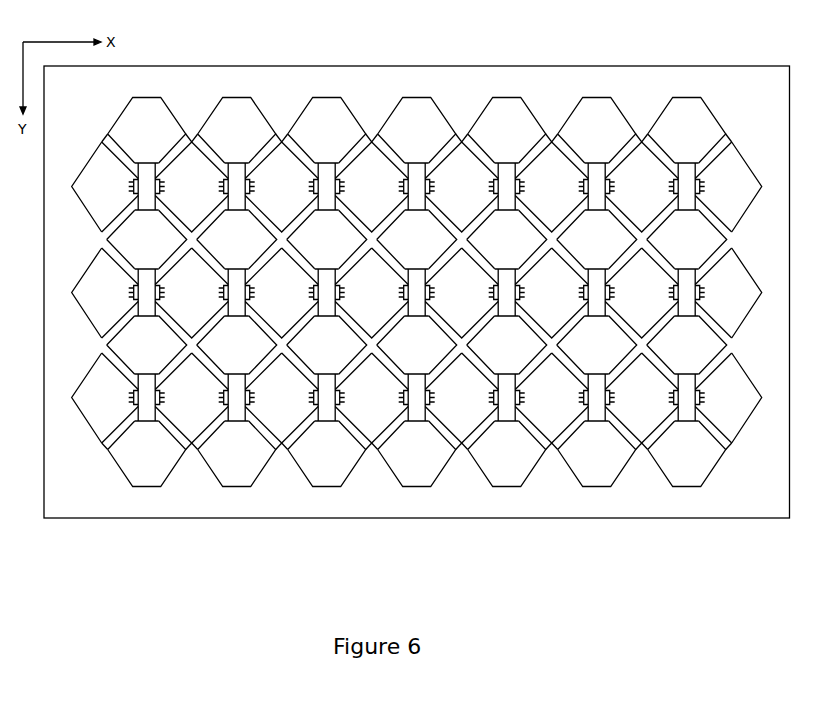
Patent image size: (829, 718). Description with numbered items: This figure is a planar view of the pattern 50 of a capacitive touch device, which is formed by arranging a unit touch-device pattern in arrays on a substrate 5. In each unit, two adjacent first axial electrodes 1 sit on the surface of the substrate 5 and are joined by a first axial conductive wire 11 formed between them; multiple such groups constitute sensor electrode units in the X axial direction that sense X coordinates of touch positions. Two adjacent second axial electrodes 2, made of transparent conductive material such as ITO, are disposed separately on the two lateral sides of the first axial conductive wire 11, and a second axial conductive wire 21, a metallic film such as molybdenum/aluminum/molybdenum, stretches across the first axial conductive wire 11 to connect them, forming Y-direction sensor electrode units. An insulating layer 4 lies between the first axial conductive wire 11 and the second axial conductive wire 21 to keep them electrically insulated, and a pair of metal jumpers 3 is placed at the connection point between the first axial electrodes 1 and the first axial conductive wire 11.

The pattern of the touch device 50 is at (190, 27).
The substrate 5 is at (63, 220).
The first axial electrode 1 is at (188, 157).
The first axial conductive wire 11 is at (130, 182).
The second axial electrode 2 is at (127, 127).
The second axial conductive wire 21 is at (147, 173).
The metal jumpers 3 is at (166, 191).
The insulating layer 4 is at (132, 197).